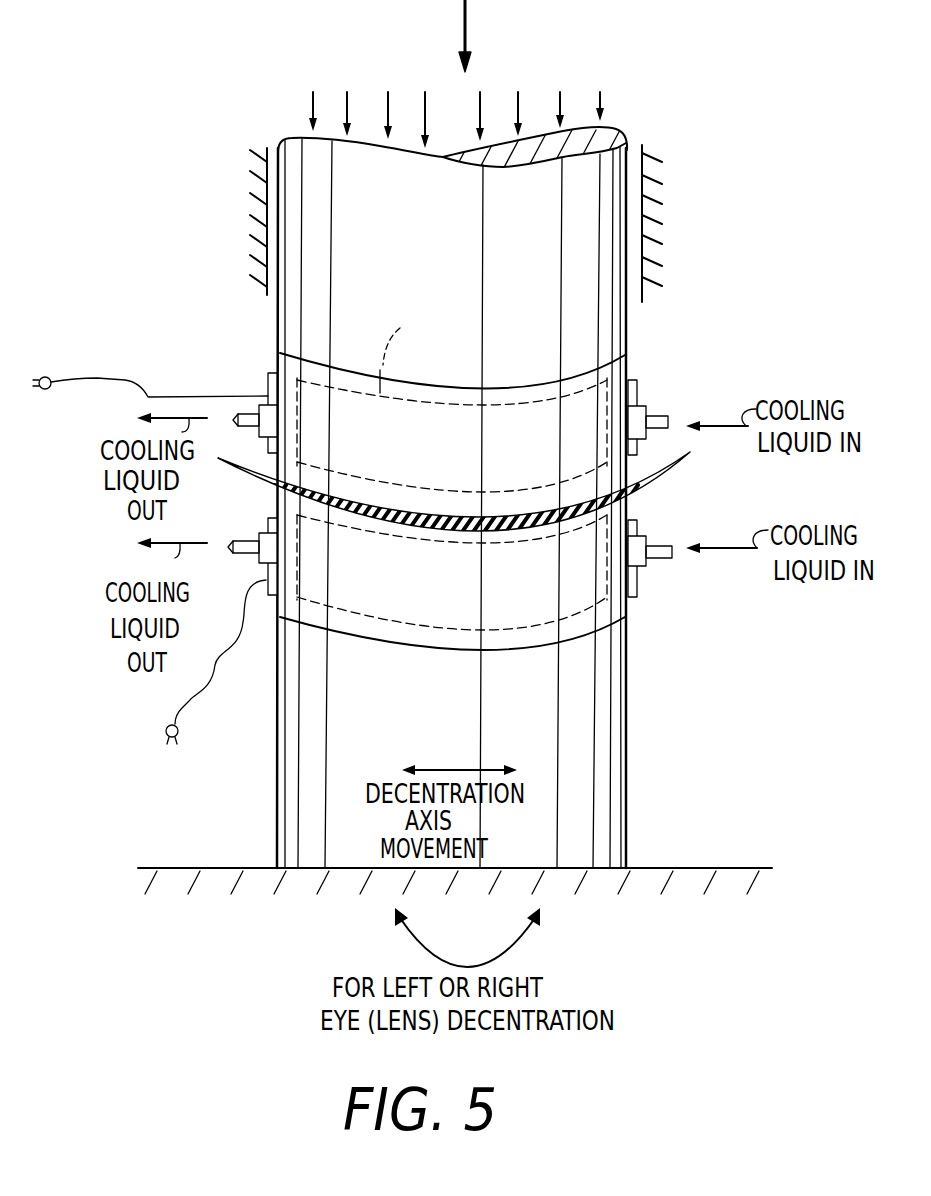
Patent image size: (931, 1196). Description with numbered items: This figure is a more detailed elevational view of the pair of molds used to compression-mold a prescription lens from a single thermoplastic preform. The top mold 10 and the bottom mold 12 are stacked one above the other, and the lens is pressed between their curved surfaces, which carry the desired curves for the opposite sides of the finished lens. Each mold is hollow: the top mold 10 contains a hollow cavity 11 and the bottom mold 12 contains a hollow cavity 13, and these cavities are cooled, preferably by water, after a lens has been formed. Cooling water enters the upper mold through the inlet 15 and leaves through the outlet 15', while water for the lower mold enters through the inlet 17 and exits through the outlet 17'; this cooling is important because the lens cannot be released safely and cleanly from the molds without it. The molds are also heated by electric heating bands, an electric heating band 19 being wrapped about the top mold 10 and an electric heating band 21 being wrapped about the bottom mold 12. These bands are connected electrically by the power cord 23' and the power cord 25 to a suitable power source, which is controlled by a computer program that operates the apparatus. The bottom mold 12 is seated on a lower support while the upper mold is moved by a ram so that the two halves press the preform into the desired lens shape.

The top mold 10 is at (604, 370).
The hollow cavity 11 is at (407, 355).
The bottom mold 12 is at (600, 617).
The hollow cavity 13 is at (376, 626).
The inlet 15 is at (653, 416).
The outlet 15' is at (310, 432).
The inlet 17 is at (659, 569).
The outlet 17' is at (310, 565).
The electric heating band 19 is at (275, 373).
The electric heating band 21 is at (265, 527).
The power cord 23' is at (150, 407).
The power cord 25 is at (186, 703).